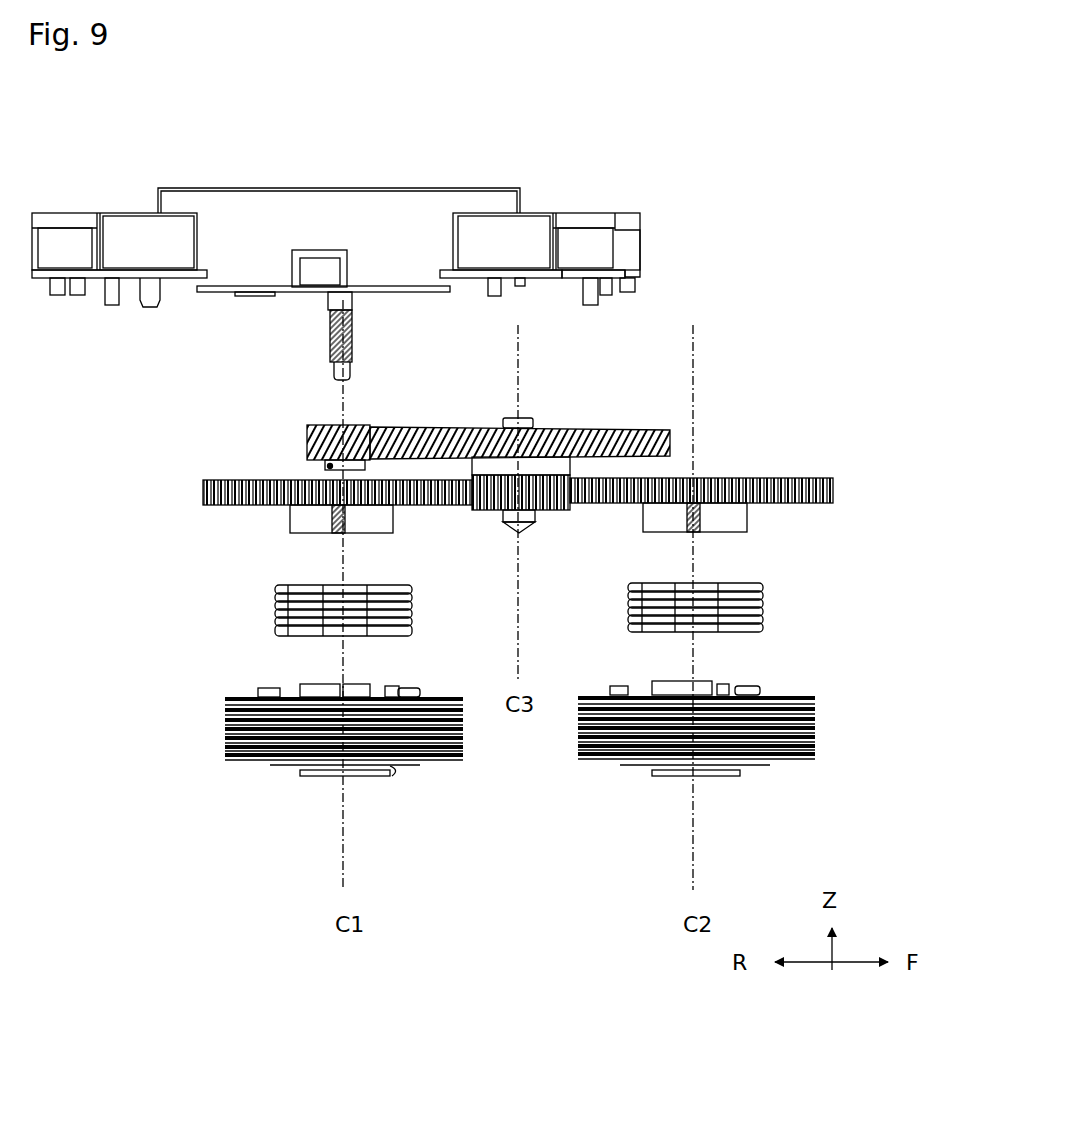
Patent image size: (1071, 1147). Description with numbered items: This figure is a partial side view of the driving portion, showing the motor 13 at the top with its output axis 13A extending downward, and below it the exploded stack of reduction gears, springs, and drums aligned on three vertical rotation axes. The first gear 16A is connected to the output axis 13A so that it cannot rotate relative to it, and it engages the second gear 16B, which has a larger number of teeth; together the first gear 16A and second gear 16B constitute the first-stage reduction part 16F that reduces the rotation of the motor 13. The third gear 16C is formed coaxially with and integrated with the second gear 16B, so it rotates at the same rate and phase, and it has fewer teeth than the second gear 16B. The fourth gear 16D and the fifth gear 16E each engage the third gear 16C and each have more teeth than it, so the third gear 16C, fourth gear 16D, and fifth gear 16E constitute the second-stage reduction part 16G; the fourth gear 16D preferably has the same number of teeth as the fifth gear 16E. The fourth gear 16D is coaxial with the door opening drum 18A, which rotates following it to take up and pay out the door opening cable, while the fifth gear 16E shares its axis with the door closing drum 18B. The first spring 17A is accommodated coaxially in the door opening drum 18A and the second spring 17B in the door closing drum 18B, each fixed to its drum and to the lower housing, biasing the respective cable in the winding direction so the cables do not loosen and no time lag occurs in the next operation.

The motor 13 is at (637, 222).
The output axis 13A is at (353, 332).
The first gear 16A is at (307, 435).
The second gear 16B is at (671, 440).
The third gear 16C is at (551, 510).
The fourth gear 16D is at (203, 497).
The fifth gear 16E is at (833, 490).
The first-stage reduction part 16F is at (678, 412).
The second-stage reduction part 16G is at (796, 522).
The first spring 17A is at (272, 612).
The second spring 17B is at (765, 602).
The door opening drum 18A is at (228, 720).
The door closing drum 18B is at (815, 722).